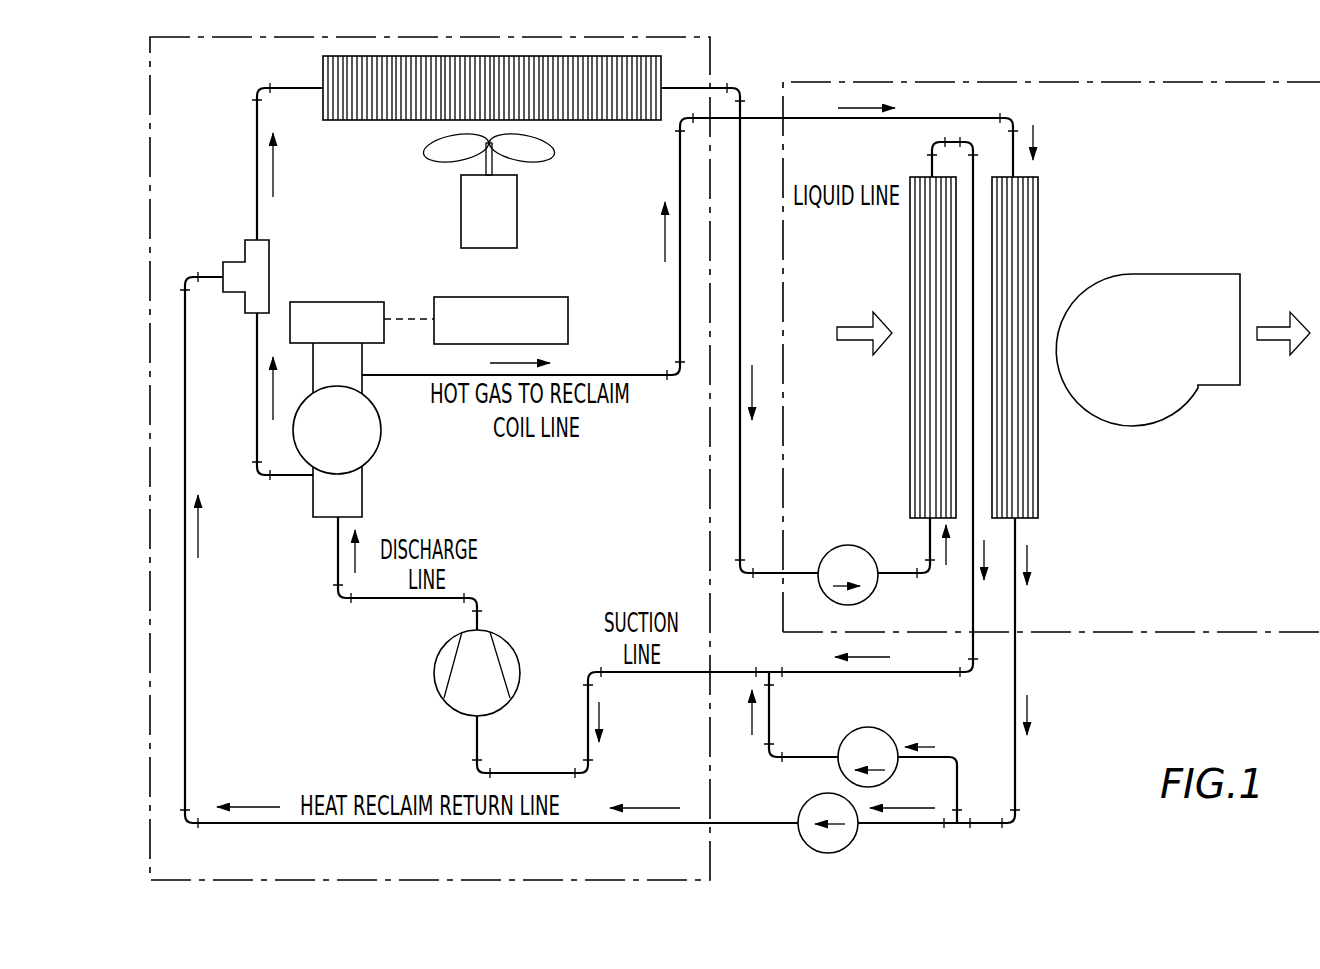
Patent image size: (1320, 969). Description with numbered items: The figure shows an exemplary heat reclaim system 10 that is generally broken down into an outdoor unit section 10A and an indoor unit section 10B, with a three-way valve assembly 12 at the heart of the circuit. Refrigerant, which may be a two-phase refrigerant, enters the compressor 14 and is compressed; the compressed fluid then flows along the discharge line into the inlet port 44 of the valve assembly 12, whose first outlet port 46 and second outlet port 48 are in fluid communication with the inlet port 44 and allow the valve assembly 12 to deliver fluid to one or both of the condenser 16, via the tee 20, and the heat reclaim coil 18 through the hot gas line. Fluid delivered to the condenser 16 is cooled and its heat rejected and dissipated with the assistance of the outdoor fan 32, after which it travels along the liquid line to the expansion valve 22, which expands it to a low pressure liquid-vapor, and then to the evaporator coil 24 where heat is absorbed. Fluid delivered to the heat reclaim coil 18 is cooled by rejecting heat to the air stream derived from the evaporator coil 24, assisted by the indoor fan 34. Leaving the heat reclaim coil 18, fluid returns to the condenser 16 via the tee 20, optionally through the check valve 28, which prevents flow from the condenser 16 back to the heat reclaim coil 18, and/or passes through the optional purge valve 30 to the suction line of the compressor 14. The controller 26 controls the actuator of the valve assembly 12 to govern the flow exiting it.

The heat reclaim system 10 is at (1040, 57).
The outdoor unit section 10A is at (150, 793).
The indoor unit section 10B is at (1280, 633).
The valve assembly 12 is at (379, 443).
The compressor 14 is at (505, 638).
The condenser 16 is at (380, 120).
The heat reclaim coil 18 is at (1040, 217).
The tee 20 is at (269, 260).
The expansion valve 22 is at (850, 545).
The evaporator coil 24 is at (910, 262).
The controller 26 is at (537, 297).
The check valve 28 is at (812, 848).
The purge valve 30 is at (870, 727).
The outdoor fan 32 is at (446, 180).
The indoor fan 34 is at (1175, 273).
The inlet port 44 is at (322, 530).
The first outlet port 46 is at (295, 500).
The second outlet port 48 is at (375, 385).